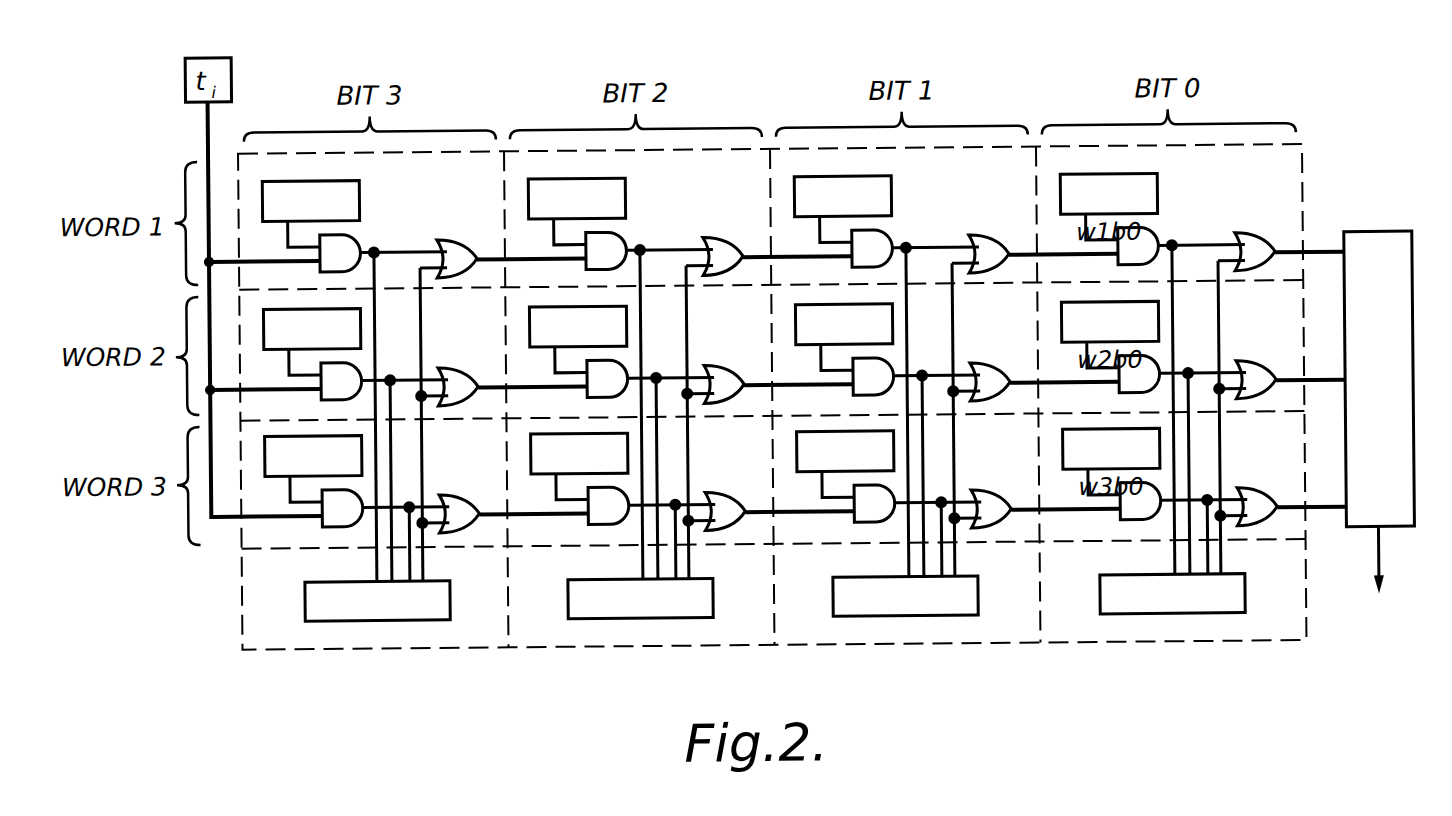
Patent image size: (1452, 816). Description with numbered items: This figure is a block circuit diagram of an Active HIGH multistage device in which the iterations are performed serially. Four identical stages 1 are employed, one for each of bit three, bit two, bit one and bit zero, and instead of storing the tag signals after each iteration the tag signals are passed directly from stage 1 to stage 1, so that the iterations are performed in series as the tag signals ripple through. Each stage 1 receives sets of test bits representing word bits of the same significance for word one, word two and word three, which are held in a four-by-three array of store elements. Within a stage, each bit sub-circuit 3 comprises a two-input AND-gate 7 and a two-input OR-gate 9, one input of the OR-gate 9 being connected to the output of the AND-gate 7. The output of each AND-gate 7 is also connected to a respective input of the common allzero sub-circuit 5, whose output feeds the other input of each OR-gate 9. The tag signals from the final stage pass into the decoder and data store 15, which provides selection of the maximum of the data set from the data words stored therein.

The stage 1 is at (314, 643).
The bit sub-circuit 3 is at (1291, 177).
The allzero sub-circuit 5 is at (1240, 603).
The AND-gate 7 is at (1143, 242).
The OR-gate 9 is at (1257, 249).
The decoder and data store 15 is at (1367, 252).